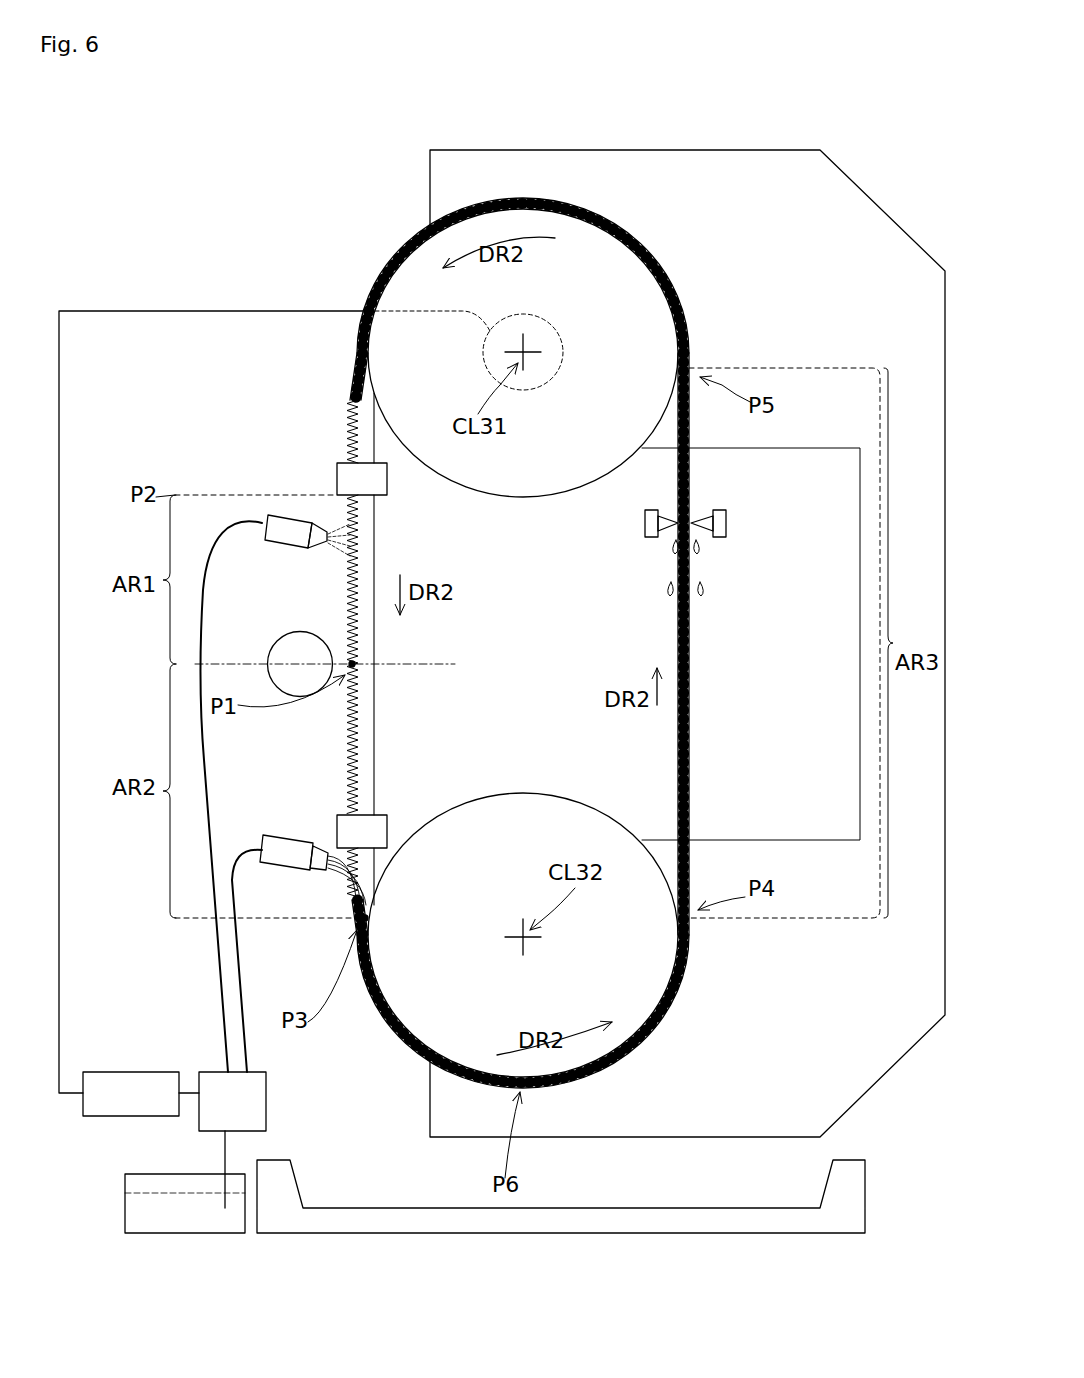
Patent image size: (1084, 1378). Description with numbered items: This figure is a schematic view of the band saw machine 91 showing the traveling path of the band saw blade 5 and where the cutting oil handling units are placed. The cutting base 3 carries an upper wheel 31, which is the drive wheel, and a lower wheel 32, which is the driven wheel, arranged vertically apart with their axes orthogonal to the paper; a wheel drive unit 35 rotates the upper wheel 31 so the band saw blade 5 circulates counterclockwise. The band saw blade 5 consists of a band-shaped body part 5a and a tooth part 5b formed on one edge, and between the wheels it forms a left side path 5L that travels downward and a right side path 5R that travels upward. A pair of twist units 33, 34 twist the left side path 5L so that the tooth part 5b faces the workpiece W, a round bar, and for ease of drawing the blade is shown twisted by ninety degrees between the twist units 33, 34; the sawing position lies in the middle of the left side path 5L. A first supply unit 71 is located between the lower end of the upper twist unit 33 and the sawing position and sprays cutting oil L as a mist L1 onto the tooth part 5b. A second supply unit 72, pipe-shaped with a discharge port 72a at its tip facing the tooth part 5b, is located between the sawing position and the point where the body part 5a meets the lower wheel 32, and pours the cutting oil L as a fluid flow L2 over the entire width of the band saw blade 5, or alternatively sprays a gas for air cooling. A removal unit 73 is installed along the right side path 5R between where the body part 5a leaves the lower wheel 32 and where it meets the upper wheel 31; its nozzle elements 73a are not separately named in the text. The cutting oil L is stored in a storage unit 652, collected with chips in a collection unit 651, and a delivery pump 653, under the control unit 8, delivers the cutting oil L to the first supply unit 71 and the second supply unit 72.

The cutting base 3 is at (716, 170).
The band saw machine 91 is at (898, 162).
The upper wheel 31 is at (694, 340).
The lower wheel 32 is at (690, 932).
The wheel drive unit 35 is at (563, 322).
The band saw blade 5 is at (506, 643).
The left side path 5L is at (362, 649).
The right side path 5R is at (672, 628).
The body part 5a is at (375, 765).
The tooth part 5b is at (346, 752).
The twist unit 33 is at (337, 480).
The twist unit 34 is at (337, 830).
The first supply unit 71 is at (283, 530).
The second supply unit 72 is at (272, 853).
The discharge port 72a is at (330, 872).
The removal unit 73 is at (728, 529).
The nozzle 73a is at (655, 510).
The control unit 8 is at (130, 1070).
The collection unit 651 is at (820, 1163).
The storage unit 652 is at (165, 1173).
The delivery pump 653 is at (268, 1100).
The workpiece W is at (270, 656).
The cutting oil L is at (145, 1192).
The mist L1 is at (343, 545).
The fluid flow L2 is at (348, 925).